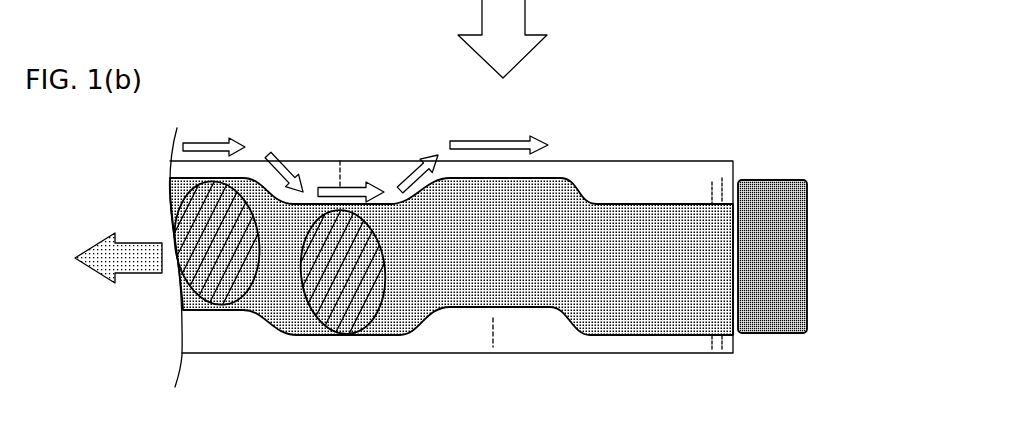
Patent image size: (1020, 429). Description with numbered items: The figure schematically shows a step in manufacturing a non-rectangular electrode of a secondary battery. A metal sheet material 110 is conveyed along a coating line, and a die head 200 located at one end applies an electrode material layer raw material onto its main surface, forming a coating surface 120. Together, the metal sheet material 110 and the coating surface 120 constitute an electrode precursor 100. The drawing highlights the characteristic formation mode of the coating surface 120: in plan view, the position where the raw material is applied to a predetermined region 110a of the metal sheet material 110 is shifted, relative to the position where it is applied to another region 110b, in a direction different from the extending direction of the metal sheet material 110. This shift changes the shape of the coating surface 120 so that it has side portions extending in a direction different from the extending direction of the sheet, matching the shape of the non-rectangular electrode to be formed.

The electrode precursor 100 is at (875, 117).
The metal sheet material 110 is at (713, 180).
The predetermined region 110a is at (335, 300).
The another region 110b is at (198, 283).
The coating surface 120 is at (647, 243).
The die head 200 is at (775, 240).